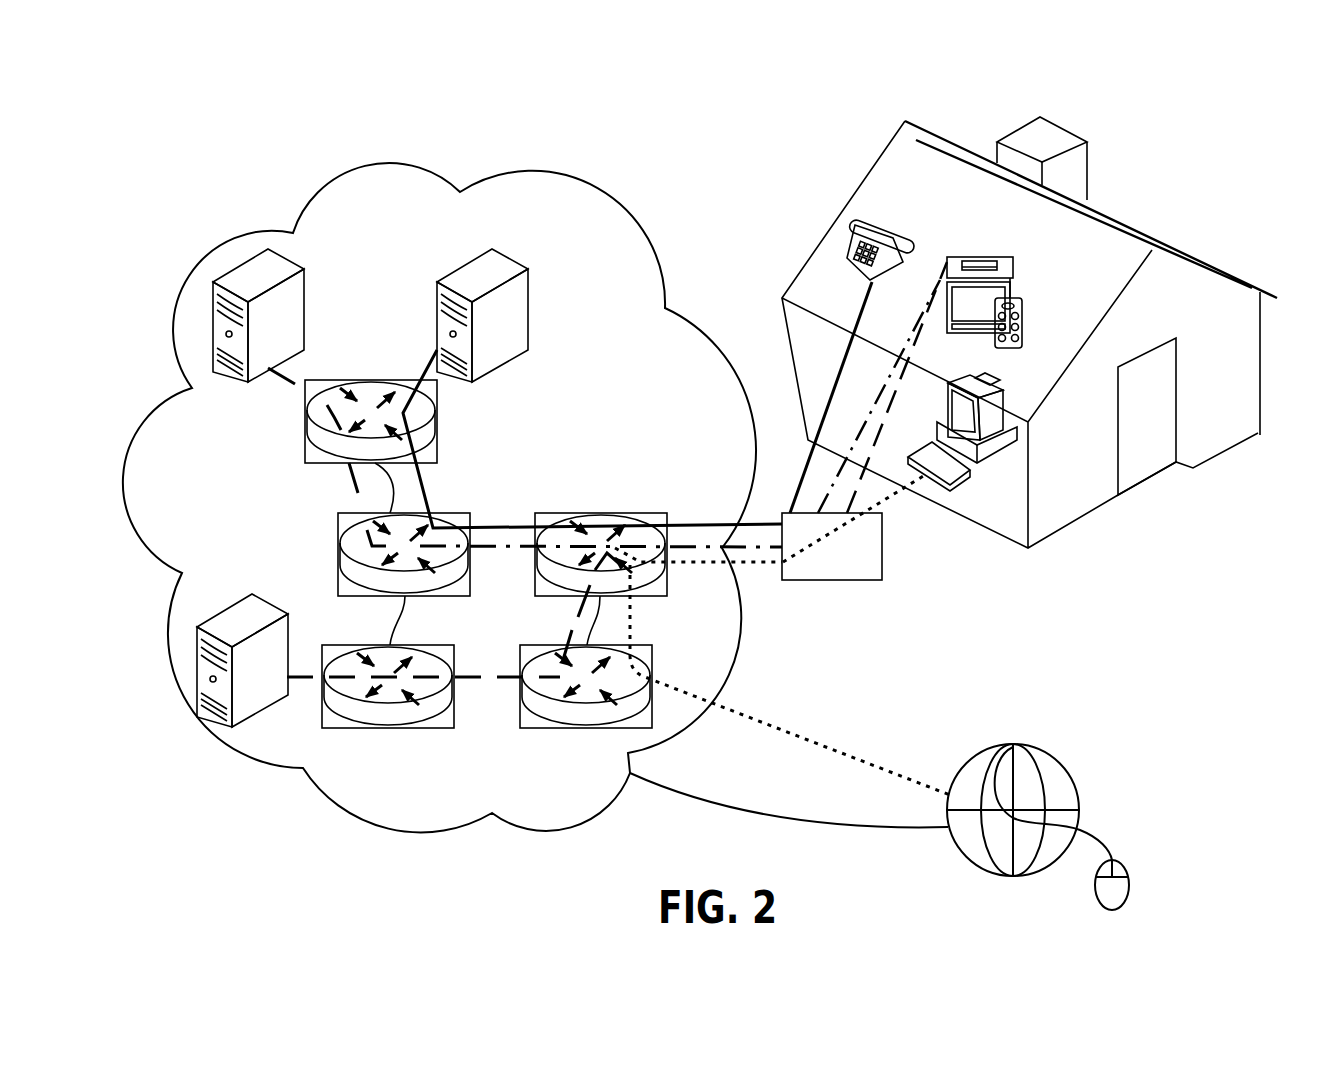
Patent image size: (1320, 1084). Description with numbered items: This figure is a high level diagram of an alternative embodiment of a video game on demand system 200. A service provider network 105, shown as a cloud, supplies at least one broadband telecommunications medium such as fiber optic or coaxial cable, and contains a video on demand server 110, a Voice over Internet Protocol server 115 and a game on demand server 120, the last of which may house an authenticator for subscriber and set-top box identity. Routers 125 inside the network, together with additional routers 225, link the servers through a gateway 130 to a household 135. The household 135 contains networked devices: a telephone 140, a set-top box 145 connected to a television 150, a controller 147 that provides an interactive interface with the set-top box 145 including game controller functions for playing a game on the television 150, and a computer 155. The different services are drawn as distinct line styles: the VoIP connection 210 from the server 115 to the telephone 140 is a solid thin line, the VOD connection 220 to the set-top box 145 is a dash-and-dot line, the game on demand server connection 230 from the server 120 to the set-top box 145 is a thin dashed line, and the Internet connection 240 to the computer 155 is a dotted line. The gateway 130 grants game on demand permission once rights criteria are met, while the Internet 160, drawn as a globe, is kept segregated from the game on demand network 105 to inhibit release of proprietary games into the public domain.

The video game on demand system 200 is at (1180, 98).
The service provider network 105 is at (420, 182).
The video on demand server 110 is at (305, 268).
The Voice over Internet Protocol server 115 is at (528, 268).
The game on demand server 120 is at (255, 595).
The routers 125 is at (305, 446).
The edge router 225 is at (350, 728).
The VoIP connection 210 is at (428, 497).
The VOD connection 220 is at (300, 366).
The game on demand server connection 230 is at (488, 677).
The Internet connection 240 is at (785, 738).
The gateway 130 is at (882, 548).
The household 135 is at (1118, 491).
The telephone 140 is at (860, 218).
The set-top box 145 is at (1013, 257).
The television 150 is at (1013, 283).
The controller 147 is at (1022, 325).
The computer 155 is at (957, 483).
The Internet 160 is at (1060, 762).